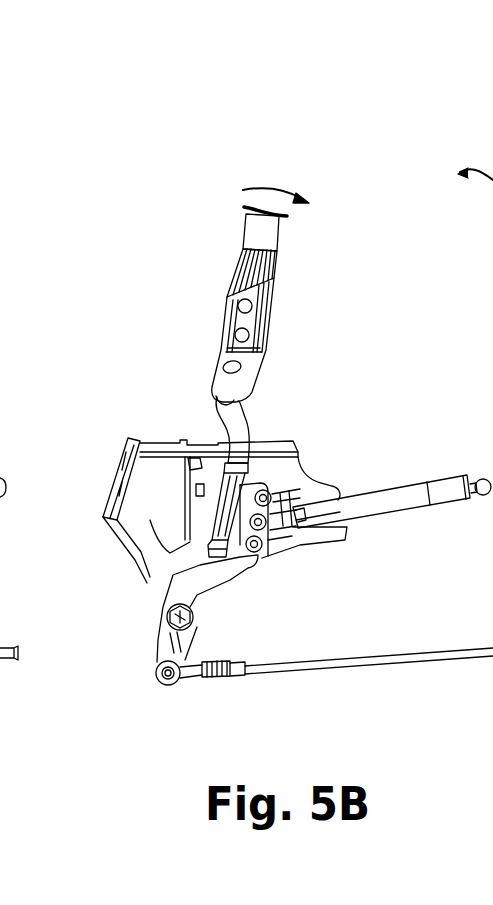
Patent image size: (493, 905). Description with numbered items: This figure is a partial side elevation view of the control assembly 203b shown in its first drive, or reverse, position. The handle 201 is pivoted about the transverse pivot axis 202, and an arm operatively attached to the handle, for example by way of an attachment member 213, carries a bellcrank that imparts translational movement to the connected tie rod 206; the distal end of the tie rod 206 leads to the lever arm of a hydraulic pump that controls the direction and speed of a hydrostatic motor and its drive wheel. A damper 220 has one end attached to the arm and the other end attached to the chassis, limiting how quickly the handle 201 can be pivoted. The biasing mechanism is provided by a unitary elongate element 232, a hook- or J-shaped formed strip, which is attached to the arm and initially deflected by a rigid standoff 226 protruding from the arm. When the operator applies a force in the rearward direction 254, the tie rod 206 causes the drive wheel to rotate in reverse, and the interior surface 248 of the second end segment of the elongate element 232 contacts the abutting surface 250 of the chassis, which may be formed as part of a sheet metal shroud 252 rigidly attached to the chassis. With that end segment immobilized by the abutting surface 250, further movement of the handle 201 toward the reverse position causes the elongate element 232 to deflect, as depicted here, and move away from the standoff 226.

The control assembly 203b is at (217, 150).
The rearward direction 254 is at (268, 188).
The handle 201 is at (248, 222).
The attachment member 213 is at (250, 406).
The interior surface 248 is at (200, 485).
The abutting surface 250 is at (193, 466).
The sheet metal shroud 252 is at (130, 438).
The elongate element 232 is at (170, 545).
The damper 220 is at (392, 488).
The standoff 226 is at (173, 575).
The pivot axis 202 is at (195, 607).
The tie rod 206 is at (375, 666).